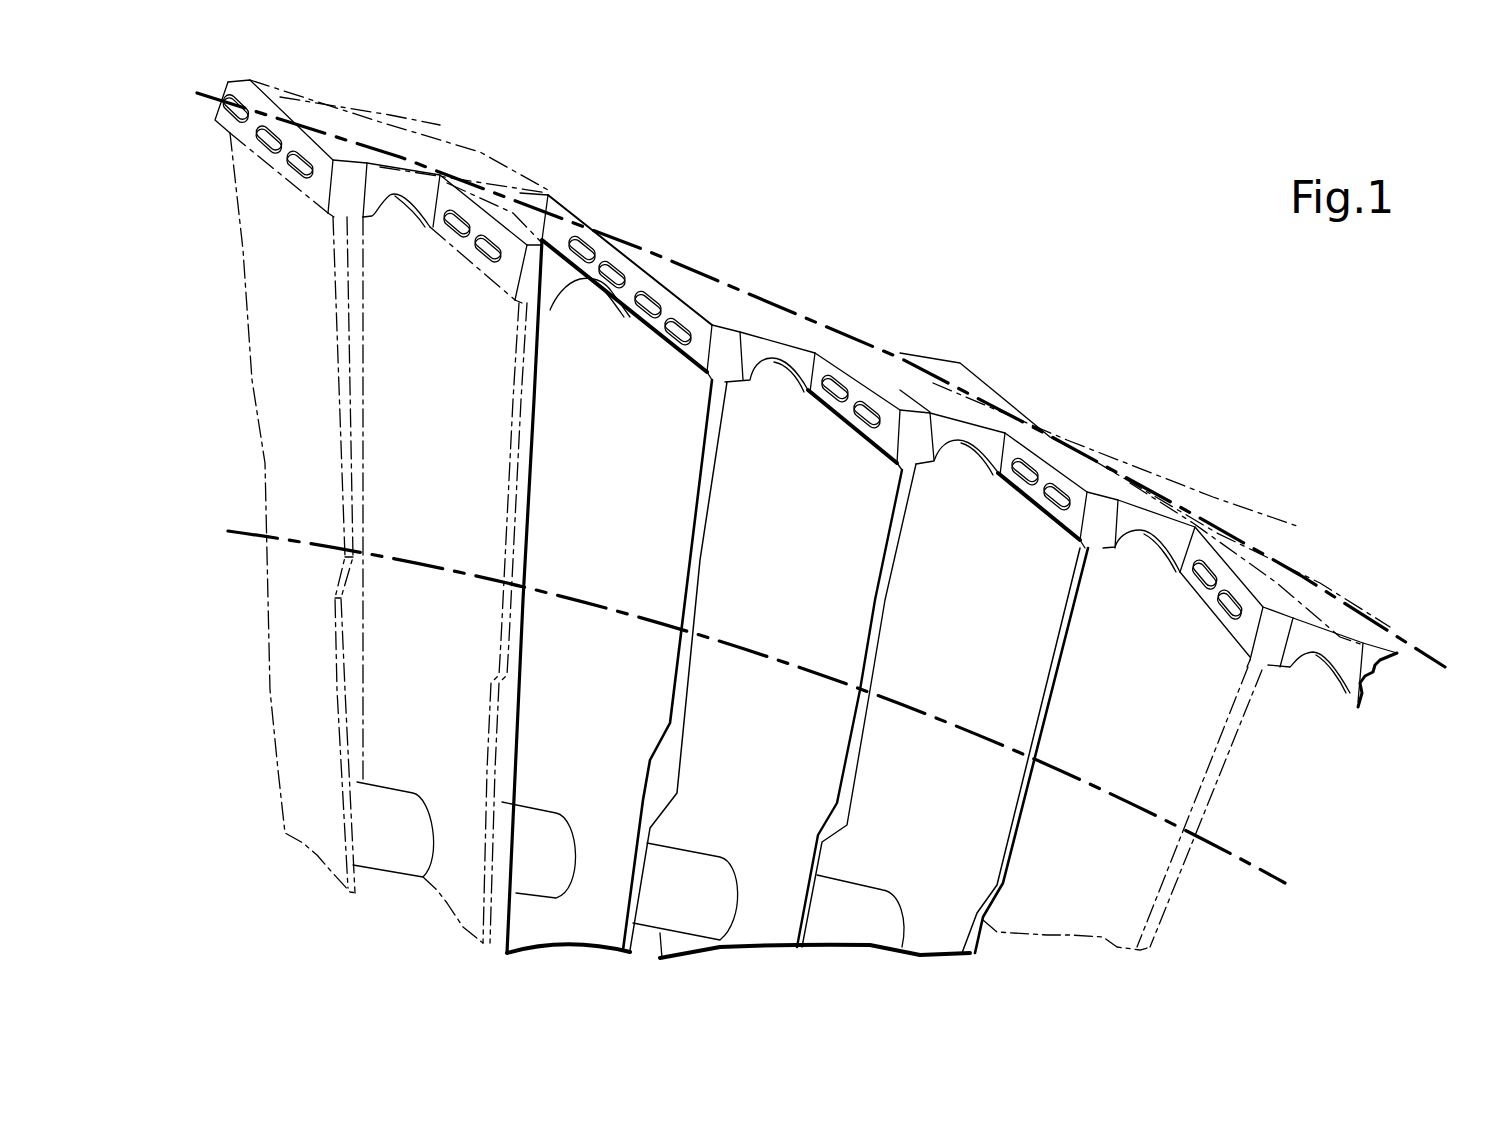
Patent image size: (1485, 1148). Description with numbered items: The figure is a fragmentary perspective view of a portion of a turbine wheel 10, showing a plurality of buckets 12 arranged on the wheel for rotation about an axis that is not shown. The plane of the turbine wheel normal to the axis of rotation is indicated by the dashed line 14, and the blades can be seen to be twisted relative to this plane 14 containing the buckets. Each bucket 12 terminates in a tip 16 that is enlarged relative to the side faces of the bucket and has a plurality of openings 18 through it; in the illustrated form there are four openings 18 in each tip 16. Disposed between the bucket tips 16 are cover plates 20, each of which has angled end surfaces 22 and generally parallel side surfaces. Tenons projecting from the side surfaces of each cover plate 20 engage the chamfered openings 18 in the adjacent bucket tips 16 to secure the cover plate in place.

The turbine wheel 10 is at (767, 217).
The bucket 12 is at (796, 556).
The plane of the turbine wheel 14 is at (1403, 641).
The tip 16 is at (727, 363).
The opening 18 is at (650, 313).
The cover plate 20 is at (560, 197).
The angled end surface 22 is at (818, 346).